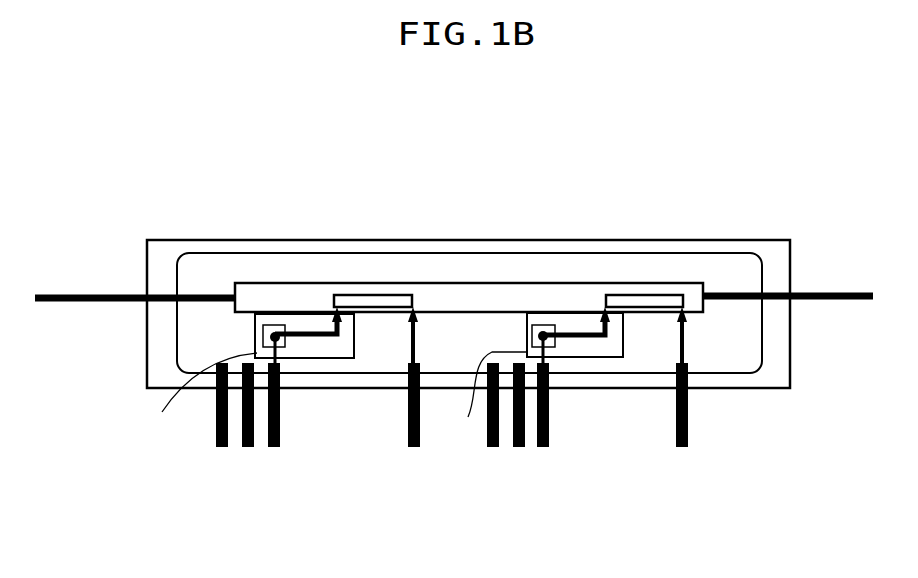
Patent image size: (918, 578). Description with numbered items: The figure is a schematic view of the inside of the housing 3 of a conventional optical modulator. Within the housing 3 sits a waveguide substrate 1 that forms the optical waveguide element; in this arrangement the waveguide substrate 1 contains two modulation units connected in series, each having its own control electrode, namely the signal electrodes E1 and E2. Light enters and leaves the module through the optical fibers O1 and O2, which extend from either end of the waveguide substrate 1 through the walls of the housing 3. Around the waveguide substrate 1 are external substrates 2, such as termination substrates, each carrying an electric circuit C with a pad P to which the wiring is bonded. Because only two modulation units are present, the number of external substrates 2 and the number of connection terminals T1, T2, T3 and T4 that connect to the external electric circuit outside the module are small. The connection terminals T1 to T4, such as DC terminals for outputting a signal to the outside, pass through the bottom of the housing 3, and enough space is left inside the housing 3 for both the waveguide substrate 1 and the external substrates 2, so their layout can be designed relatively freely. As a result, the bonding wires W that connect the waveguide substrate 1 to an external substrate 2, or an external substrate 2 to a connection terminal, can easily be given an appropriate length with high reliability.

The waveguide substrate 1 is at (293, 290).
The external substrate 2 is at (348, 350).
The housing 3 is at (517, 243).
The optical fiber for input/output O1 is at (730, 292).
The optical fiber for input/output O2 is at (207, 295).
The control electrode (signal electrode) E1 is at (647, 293).
The control electrode (signal electrode) E2 is at (378, 295).
The connection terminal T1 is at (682, 448).
The connection terminal T2 is at (541, 448).
The connection terminal T3 is at (413, 448).
The connection terminal T4 is at (273, 448).
The pad P is at (282, 345).
The electric circuit C is at (317, 340).
The bonding wire W is at (330, 396).